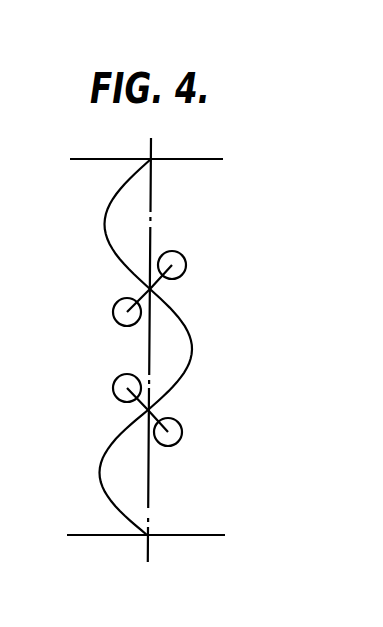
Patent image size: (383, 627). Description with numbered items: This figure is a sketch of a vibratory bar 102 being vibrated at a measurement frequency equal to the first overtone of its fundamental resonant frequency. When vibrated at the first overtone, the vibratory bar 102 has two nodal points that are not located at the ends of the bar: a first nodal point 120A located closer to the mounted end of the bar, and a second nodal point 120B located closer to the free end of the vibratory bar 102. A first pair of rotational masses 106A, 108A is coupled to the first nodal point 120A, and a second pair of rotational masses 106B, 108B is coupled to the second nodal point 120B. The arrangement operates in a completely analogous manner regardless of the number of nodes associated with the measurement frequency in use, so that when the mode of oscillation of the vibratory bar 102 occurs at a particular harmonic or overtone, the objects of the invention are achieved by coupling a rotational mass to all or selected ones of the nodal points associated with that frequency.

The vibratory bar 102 is at (100, 472).
The rotational mass 106A is at (118, 306).
The rotational mass 106B is at (118, 386).
The rotational mass 108A is at (172, 265).
The rotational mass 108B is at (168, 432).
The first nodal point 120A is at (150, 289).
The second nodal point 120B is at (148, 410).